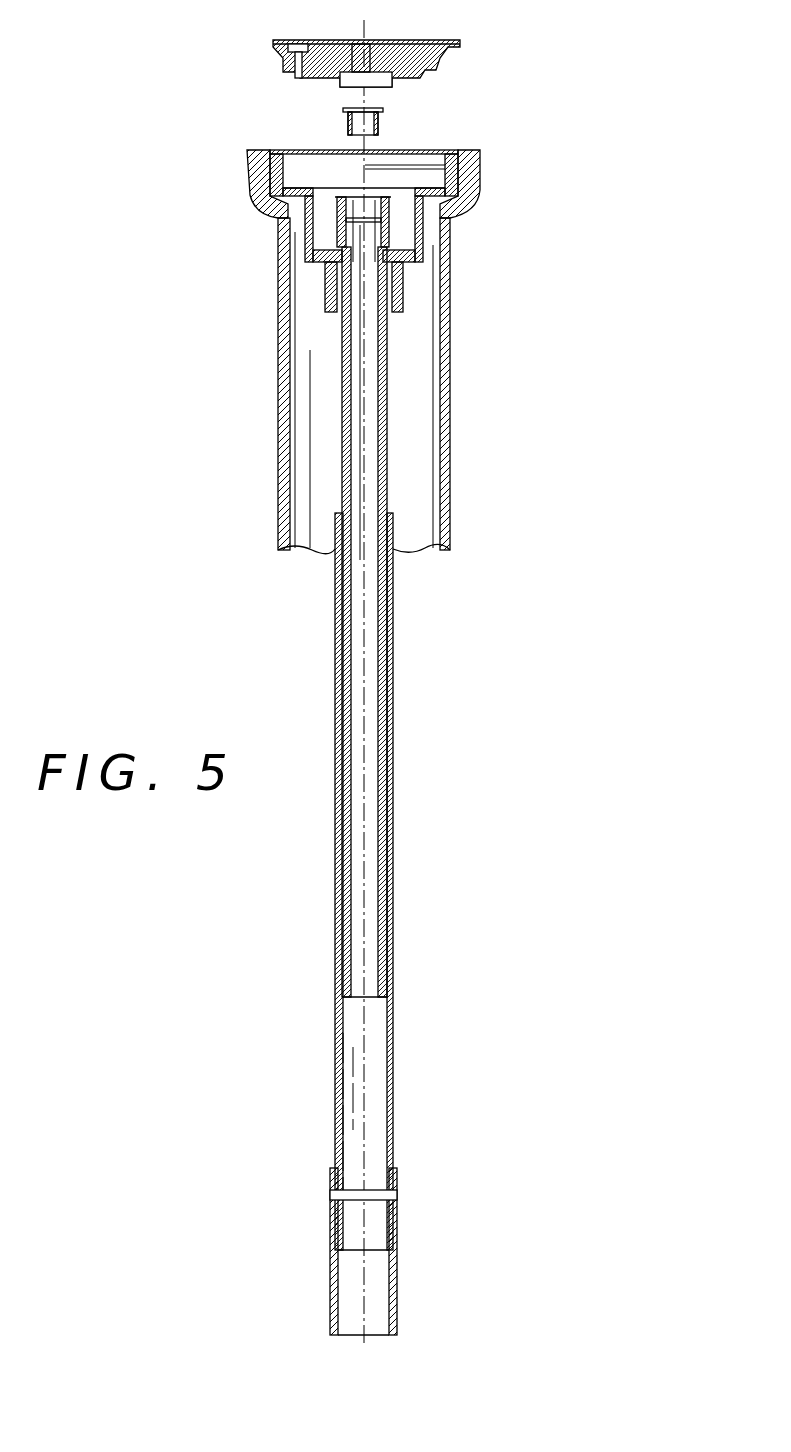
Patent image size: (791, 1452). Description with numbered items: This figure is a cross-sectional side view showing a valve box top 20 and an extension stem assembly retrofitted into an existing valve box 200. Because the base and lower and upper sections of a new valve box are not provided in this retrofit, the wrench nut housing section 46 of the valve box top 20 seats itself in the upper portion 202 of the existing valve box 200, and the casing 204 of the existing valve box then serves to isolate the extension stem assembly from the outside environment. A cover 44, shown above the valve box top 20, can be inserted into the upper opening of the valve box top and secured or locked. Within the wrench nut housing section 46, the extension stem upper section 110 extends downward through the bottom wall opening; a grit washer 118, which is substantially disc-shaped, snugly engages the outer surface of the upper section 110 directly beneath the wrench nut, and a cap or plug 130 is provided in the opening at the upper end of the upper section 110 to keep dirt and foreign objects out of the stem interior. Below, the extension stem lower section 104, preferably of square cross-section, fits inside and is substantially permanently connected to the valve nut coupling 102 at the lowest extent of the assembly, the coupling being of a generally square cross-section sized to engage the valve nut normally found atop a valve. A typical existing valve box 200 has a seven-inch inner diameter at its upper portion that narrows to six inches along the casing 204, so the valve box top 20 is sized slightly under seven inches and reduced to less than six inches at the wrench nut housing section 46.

The cover 44 is at (438, 42).
The cap or plug 130 is at (345, 122).
The grit washer 118 is at (404, 238).
The upper portion 202 is at (258, 212).
The wrench nut housing section 46 is at (427, 230).
The valve box top 20 is at (297, 246).
The casing 204 is at (447, 402).
The existing valve box 200 is at (355, 355).
The extension stem upper section 110 is at (388, 478).
The extension stem lower section 104 is at (393, 1080).
The valve nut coupling 102 is at (397, 1278).